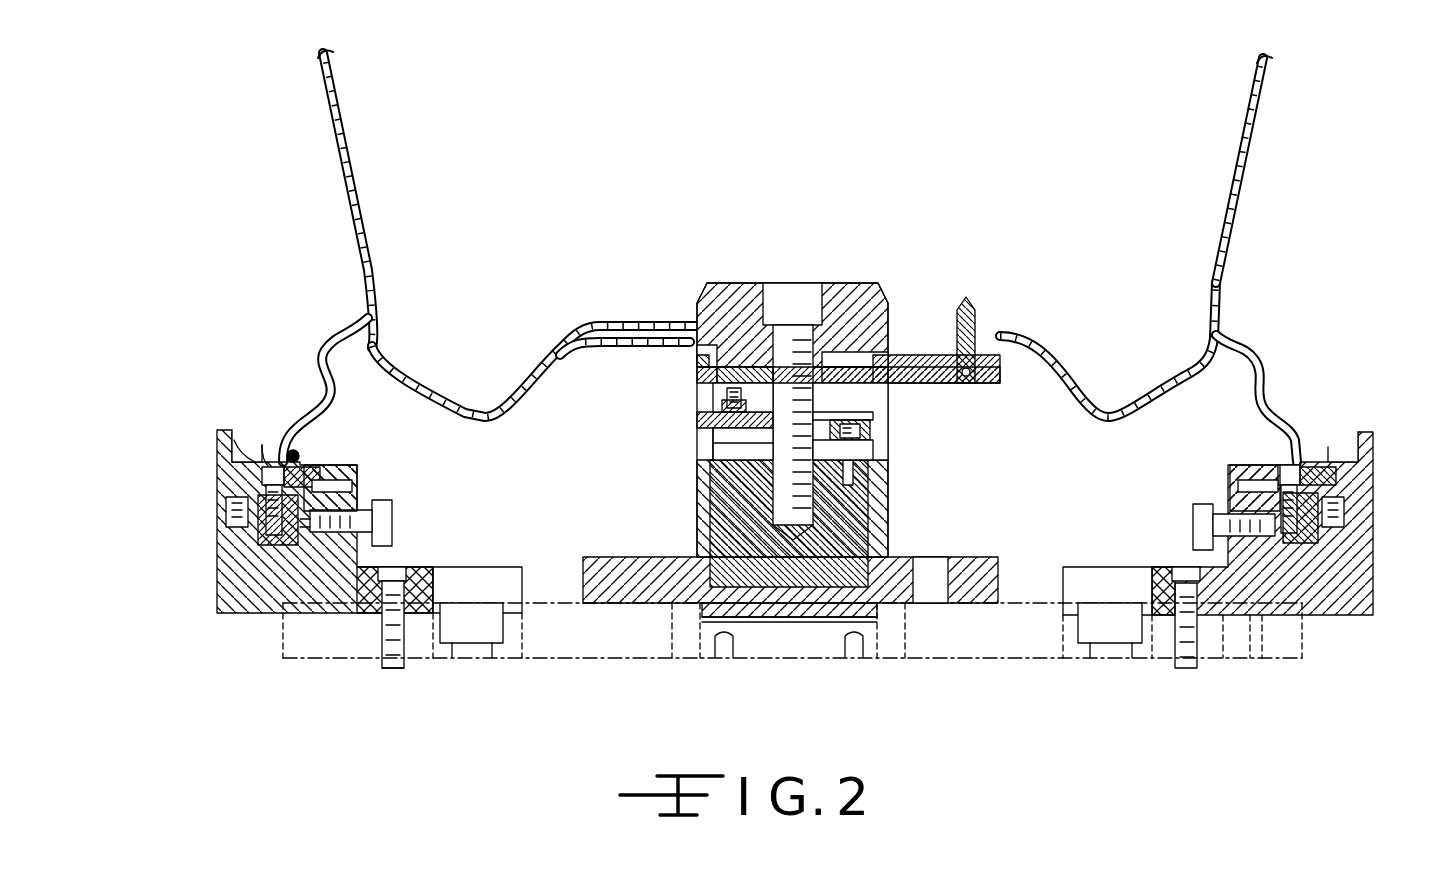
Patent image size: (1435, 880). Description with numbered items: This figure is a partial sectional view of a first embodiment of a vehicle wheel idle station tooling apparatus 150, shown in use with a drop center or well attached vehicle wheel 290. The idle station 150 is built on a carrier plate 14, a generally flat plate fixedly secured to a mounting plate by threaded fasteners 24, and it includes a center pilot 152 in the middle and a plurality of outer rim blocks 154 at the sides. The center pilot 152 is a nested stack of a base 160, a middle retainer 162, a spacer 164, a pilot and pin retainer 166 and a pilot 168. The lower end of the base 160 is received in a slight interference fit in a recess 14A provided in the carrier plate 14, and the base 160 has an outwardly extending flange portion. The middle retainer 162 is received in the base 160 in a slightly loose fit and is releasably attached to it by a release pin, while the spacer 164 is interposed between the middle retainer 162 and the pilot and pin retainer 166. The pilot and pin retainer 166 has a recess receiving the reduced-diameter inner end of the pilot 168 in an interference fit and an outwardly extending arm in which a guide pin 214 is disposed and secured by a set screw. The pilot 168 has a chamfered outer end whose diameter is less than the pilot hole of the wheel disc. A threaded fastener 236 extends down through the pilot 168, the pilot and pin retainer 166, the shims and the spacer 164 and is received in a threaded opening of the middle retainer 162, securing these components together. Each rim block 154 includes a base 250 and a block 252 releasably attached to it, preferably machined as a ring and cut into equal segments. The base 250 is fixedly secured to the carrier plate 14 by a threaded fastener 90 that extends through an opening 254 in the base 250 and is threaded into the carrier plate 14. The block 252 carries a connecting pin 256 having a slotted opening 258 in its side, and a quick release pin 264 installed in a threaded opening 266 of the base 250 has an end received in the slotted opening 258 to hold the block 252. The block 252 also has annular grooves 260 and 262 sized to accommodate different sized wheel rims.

The carrier plate 14 is at (995, 632).
The opening or recess 14A is at (835, 620).
The threaded fasteners 24 is at (460, 662).
The threaded fastener 90 is at (395, 670).
The idle station tooling apparatus 150 is at (1102, 352).
The center pilot 152 is at (688, 450).
The outer rim blocks 154 is at (208, 530).
The base 160 is at (642, 555).
The middle retainer 162 is at (893, 466).
The spacer 164 is at (697, 415).
The pilot and pin retainer 166 is at (697, 372).
The pilot 168 is at (697, 305).
The guide pin 214 is at (977, 305).
The threaded fastener 236 is at (775, 298).
The base 250 is at (415, 575).
The block 252 is at (298, 453).
The opening 254 is at (395, 612).
The connecting pin 256 is at (300, 505).
The slotted opening 258 is at (300, 535).
The annular shaped groove 260 is at (236, 440).
The annular shaped groove 262 is at (262, 450).
The quick release pin 264 is at (385, 502).
The threaded opening 266 is at (345, 565).
The vehicle wheel 290 is at (345, 198).